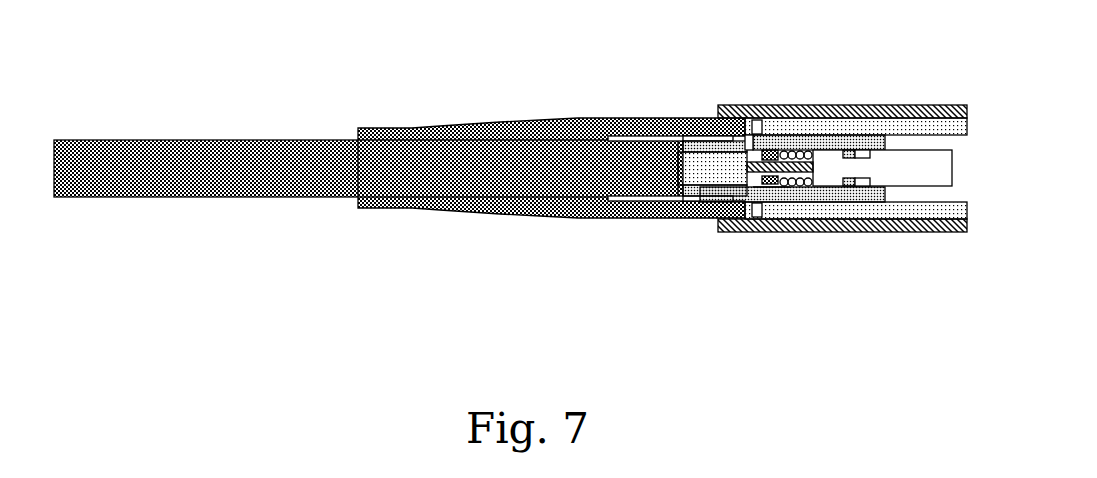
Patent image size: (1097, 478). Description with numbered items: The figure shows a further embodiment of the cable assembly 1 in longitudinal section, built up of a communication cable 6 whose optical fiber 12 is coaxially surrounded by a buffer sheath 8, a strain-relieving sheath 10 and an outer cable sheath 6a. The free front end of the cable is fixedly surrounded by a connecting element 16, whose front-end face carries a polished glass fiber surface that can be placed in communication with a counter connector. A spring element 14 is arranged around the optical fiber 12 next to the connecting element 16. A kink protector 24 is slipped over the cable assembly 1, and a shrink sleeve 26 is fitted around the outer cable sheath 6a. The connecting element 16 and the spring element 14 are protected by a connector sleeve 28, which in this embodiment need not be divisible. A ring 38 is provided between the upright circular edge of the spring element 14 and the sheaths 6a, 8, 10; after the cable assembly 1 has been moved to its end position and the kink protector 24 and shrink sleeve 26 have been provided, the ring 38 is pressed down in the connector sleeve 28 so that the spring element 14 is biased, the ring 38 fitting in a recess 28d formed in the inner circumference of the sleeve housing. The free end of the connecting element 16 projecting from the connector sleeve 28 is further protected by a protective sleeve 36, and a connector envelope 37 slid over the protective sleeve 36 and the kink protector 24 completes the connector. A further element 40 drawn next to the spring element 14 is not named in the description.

The cable assembly 1 is at (366, 117).
The communication cable 6 is at (276, 167).
The cable sheath 6a is at (279, 188).
The buffer sheath 8 is at (692, 172).
The strain-relieving sheath 10 is at (685, 148).
The optical fiber 12 is at (797, 167).
The spring element 14 is at (798, 185).
The connecting element 16 is at (832, 173).
The kink protector 24 is at (545, 125).
The shrink sleeve 26 is at (638, 138).
The connector sleeve 28 is at (890, 143).
The recess 28d is at (775, 186).
The protective sleeve 36 is at (942, 212).
The connector envelope 37 is at (880, 232).
The ring 38 is at (738, 122).
The stop element 40 is at (766, 150).